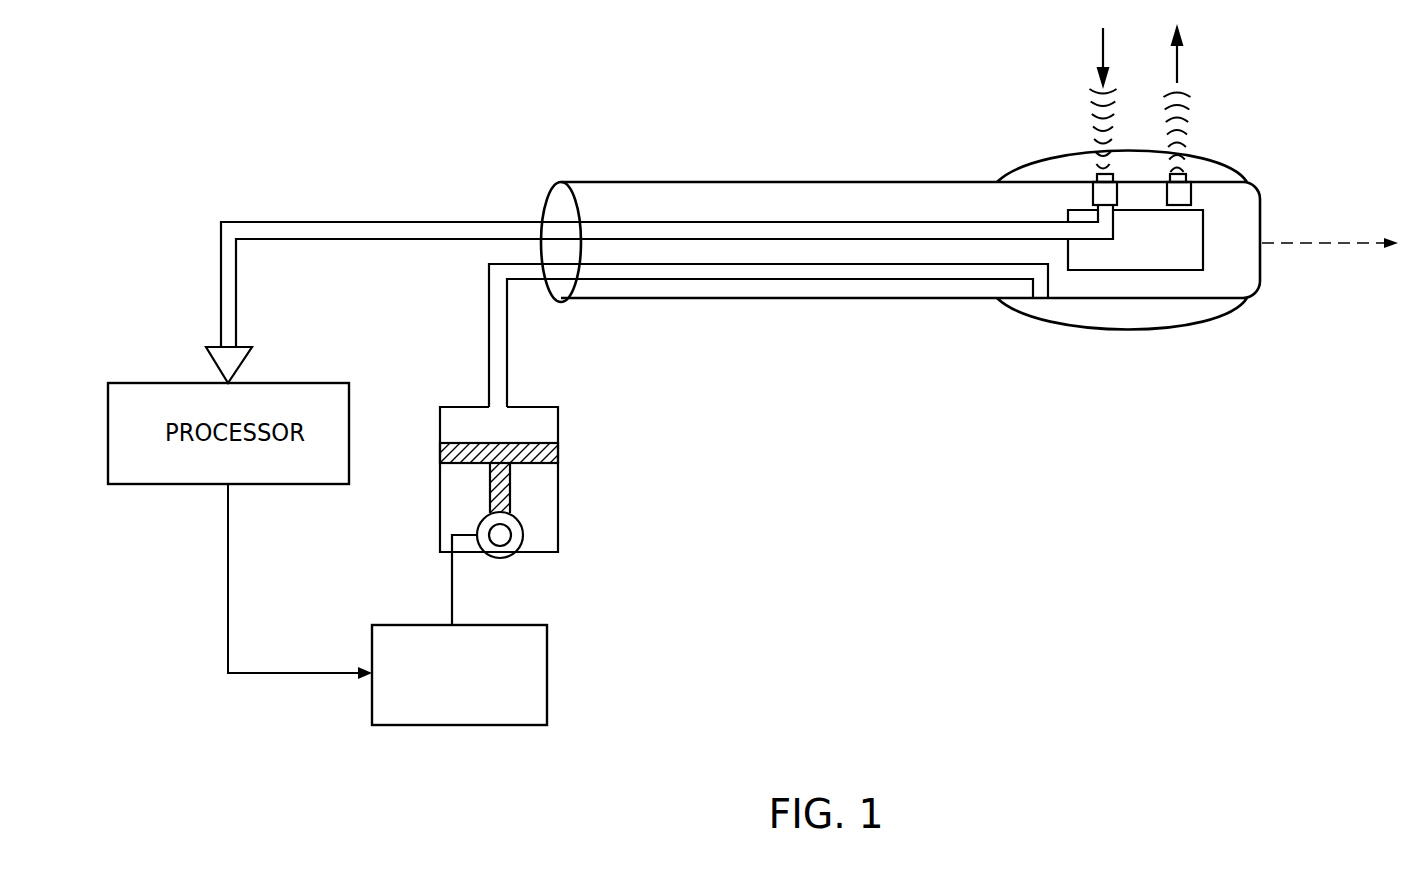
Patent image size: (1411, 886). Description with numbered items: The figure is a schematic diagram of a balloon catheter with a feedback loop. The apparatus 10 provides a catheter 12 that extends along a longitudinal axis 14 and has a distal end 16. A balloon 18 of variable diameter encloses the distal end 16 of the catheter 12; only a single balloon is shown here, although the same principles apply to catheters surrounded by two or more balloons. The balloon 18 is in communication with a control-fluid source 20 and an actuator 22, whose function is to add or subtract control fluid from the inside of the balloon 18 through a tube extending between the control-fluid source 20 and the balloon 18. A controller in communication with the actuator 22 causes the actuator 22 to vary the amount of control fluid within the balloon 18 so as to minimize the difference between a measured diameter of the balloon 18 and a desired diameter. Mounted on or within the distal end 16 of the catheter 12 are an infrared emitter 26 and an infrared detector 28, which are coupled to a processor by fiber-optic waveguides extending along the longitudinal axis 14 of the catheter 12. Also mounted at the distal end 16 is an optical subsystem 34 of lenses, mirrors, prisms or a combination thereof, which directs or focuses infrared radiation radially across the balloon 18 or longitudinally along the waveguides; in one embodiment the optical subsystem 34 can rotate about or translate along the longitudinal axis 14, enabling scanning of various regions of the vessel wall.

The apparatus 10 is at (488, 140).
The catheter 12 is at (788, 180).
The longitudinal axis 14 is at (1313, 245).
The distal end 16 is at (1082, 385).
The balloon 18 is at (1178, 328).
The control-fluid source 20 is at (559, 487).
The actuator 22 is at (548, 672).
The infrared emitter 26 is at (1188, 177).
The infrared detector 28 is at (1092, 177).
The optical subsystem 34 is at (1122, 254).